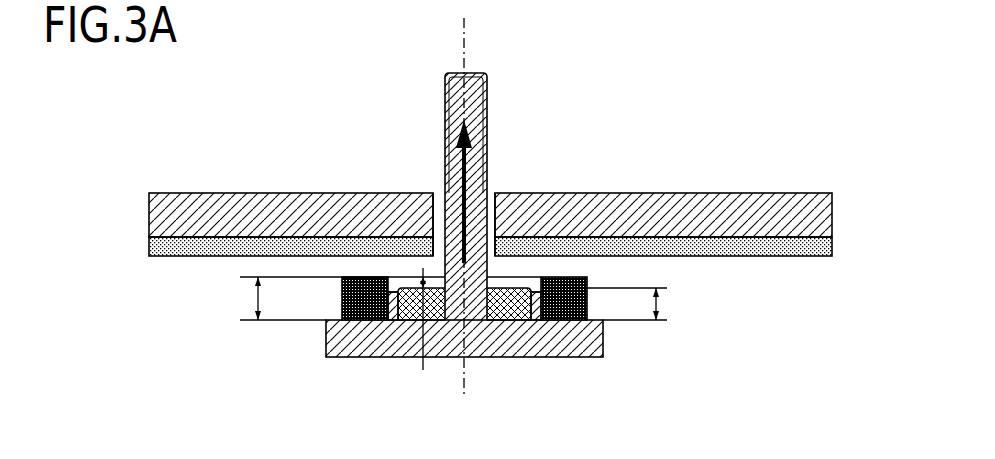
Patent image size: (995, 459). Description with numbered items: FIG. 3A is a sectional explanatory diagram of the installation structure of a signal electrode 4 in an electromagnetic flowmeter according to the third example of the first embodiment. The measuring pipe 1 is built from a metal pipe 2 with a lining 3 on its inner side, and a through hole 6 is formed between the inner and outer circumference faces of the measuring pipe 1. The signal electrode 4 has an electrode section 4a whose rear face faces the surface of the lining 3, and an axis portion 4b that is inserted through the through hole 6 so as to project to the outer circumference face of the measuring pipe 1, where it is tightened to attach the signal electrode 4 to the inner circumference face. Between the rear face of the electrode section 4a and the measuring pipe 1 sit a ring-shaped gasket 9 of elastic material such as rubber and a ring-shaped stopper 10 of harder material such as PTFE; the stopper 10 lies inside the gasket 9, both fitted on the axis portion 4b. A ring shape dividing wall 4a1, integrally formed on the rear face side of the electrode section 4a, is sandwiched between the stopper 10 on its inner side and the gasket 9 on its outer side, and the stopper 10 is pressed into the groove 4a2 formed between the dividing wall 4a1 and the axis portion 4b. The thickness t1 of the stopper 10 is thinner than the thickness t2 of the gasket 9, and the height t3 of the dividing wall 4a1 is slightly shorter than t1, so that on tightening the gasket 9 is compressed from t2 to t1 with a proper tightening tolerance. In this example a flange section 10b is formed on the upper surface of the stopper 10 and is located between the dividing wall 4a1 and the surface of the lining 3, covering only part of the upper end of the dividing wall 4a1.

The measuring pipe 1 is at (224, 193).
The metal pipe 2 is at (776, 193).
The lining 3 is at (774, 250).
The signal electrode 4 is at (454, 251).
The electrode section 4a is at (327, 357).
The ring shape dividing wall 4a1 is at (397, 322).
The groove 4a2 is at (444, 322).
The axis portion 4b is at (487, 127).
The through hole 6 is at (433, 200).
The gasket 9 is at (322, 322).
The stopper 10 is at (502, 305).
The flange section 10b is at (392, 292).
The thickness of the stopper t1 is at (423, 332).
The thickness of the gasket t2 is at (335, 298).
The height of the ring shape dividing wall t3 is at (588, 298).